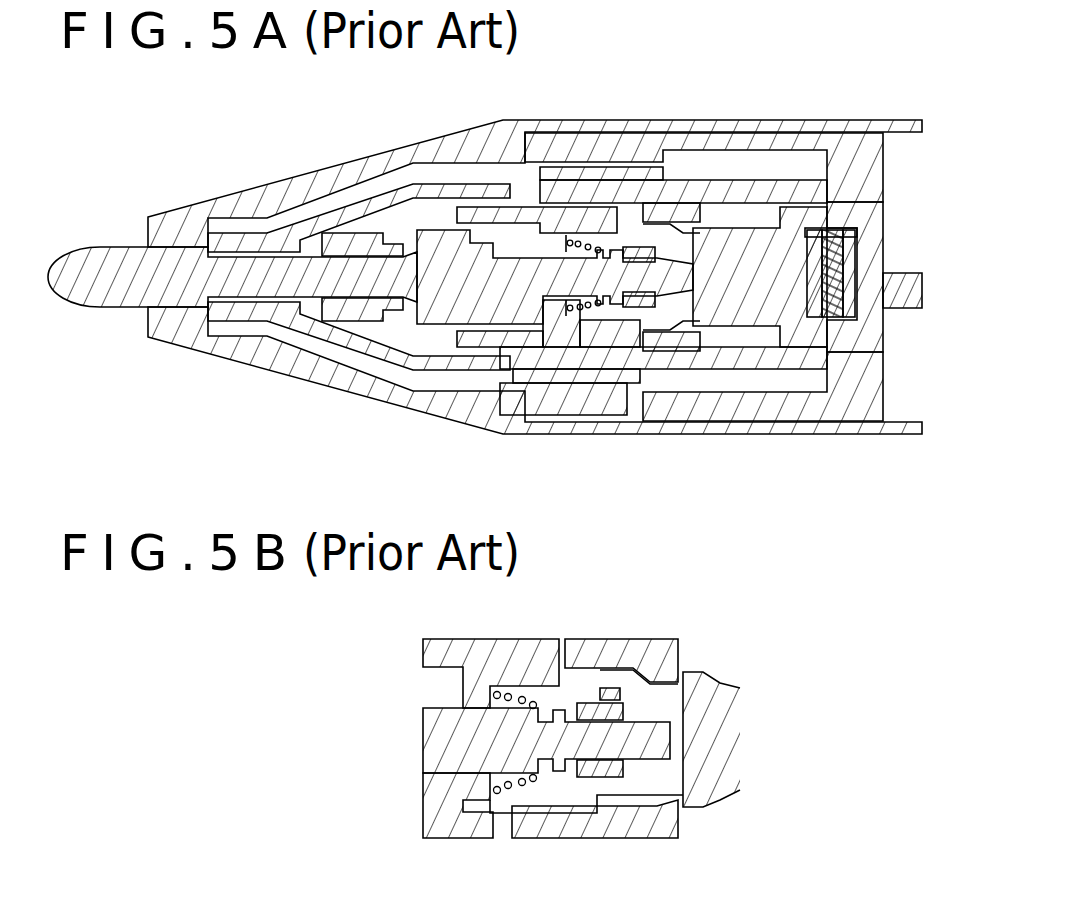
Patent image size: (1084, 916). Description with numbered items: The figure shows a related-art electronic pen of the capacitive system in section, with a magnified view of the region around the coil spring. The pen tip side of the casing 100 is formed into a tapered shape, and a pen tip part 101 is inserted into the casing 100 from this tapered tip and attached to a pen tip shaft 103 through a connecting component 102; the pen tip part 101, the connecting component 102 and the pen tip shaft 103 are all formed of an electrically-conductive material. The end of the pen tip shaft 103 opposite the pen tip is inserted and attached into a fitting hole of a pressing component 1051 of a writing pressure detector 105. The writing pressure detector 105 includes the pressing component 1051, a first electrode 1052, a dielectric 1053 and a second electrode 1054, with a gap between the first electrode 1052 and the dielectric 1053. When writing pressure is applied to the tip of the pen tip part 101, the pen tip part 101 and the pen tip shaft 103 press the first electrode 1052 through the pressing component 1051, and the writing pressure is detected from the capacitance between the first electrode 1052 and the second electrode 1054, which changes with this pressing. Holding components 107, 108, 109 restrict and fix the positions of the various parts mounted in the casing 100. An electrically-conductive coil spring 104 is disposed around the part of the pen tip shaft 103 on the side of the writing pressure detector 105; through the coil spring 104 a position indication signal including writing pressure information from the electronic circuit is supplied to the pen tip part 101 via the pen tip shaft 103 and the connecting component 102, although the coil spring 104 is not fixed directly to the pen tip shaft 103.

In FIG. 5A, the casing 100 is at (313, 148).
In FIG. 5A, the pen tip part 101 is at (117, 295).
In FIG. 5A, the connecting component 102 is at (382, 330).
In FIG. 5A, the pen tip shaft 103 is at (443, 300).
In FIG. 5B, the pen tip shaft 103 is at (457, 752).
In FIG. 5A, the coil spring 104 is at (572, 239).
In FIG. 5B, the coil spring 104 is at (520, 697).
In FIG. 5A, the writing pressure detector 105 is at (822, 391).
In FIG. 5A, the holding component 107 is at (503, 213).
In FIG. 5B, the holding component 107 is at (480, 660).
In FIG. 5A, the holding component 108 is at (862, 150).
In FIG. 5A, the holding component 109 is at (620, 337).
In FIG. 5B, the holding component 109 is at (570, 822).
In FIG. 5A, the pressing component 1051 is at (780, 328).
In FIG. 5B, the pressing component 1051 is at (717, 747).
In FIG. 5A, the first electrode 1052 is at (815, 300).
In FIG. 5A, the dielectric 1053 is at (832, 322).
In FIG. 5A, the second electrode 1054 is at (850, 322).